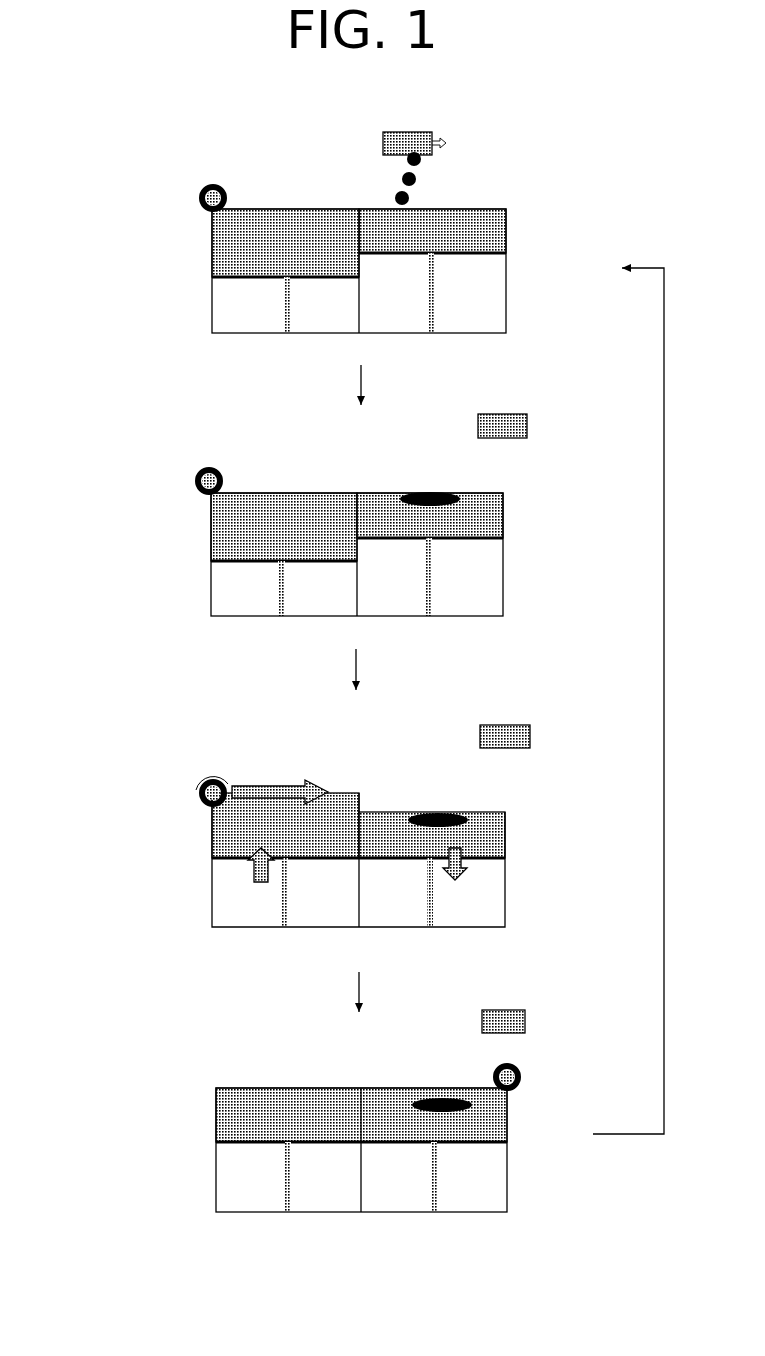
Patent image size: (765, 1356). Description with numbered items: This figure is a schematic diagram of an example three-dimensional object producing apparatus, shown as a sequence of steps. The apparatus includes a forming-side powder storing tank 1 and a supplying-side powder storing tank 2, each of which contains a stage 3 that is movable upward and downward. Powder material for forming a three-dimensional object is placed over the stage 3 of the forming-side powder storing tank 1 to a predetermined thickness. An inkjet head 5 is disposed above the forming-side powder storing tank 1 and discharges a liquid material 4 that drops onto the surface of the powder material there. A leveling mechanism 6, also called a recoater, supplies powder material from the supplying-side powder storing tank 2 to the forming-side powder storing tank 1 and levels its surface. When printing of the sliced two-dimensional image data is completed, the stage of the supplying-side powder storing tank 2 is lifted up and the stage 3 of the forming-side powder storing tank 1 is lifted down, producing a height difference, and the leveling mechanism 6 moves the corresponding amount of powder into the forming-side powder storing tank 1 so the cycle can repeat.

The forming-side powder storing tank 1 is at (488, 227).
The supplying-side powder storing tank 2 is at (228, 256).
The stage 3 is at (280, 277).
The liquid material 4 is at (417, 178).
The inkjet head 5 is at (383, 136).
The leveling mechanism 6 is at (199, 194).